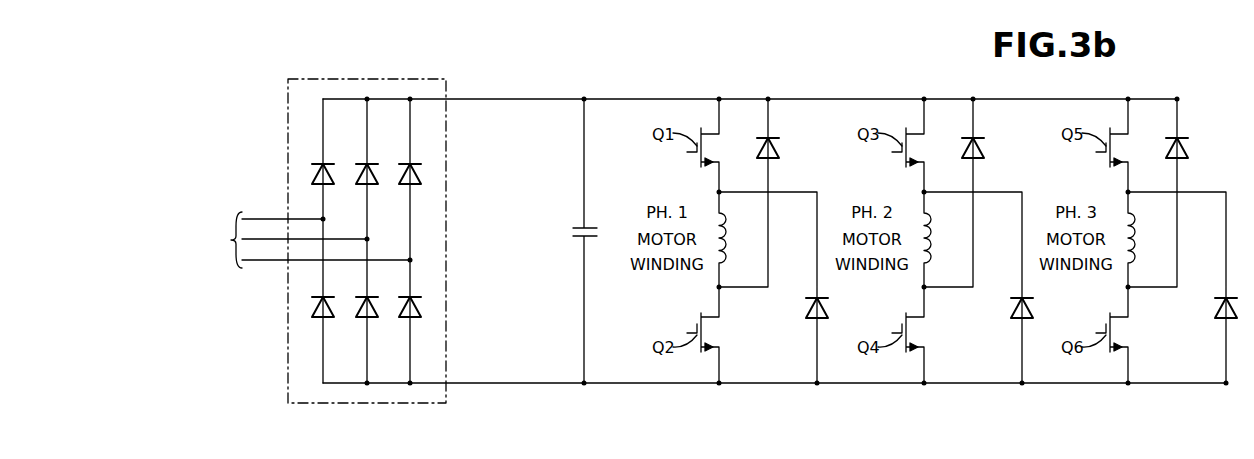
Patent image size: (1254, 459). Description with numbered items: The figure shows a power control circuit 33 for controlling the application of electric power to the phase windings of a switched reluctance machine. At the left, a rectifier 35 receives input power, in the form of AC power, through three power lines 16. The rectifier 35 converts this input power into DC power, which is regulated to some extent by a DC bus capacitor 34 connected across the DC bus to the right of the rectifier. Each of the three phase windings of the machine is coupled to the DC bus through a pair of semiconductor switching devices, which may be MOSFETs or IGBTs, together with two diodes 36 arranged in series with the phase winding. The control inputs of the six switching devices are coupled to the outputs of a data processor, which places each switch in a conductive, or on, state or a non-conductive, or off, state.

The power lines 16 is at (233, 240).
The power control circuit 33 is at (400, 53).
The DC bus capacitor 34 is at (578, 238).
The rectifier 35 is at (392, 407).
The diodes 36 is at (775, 152).